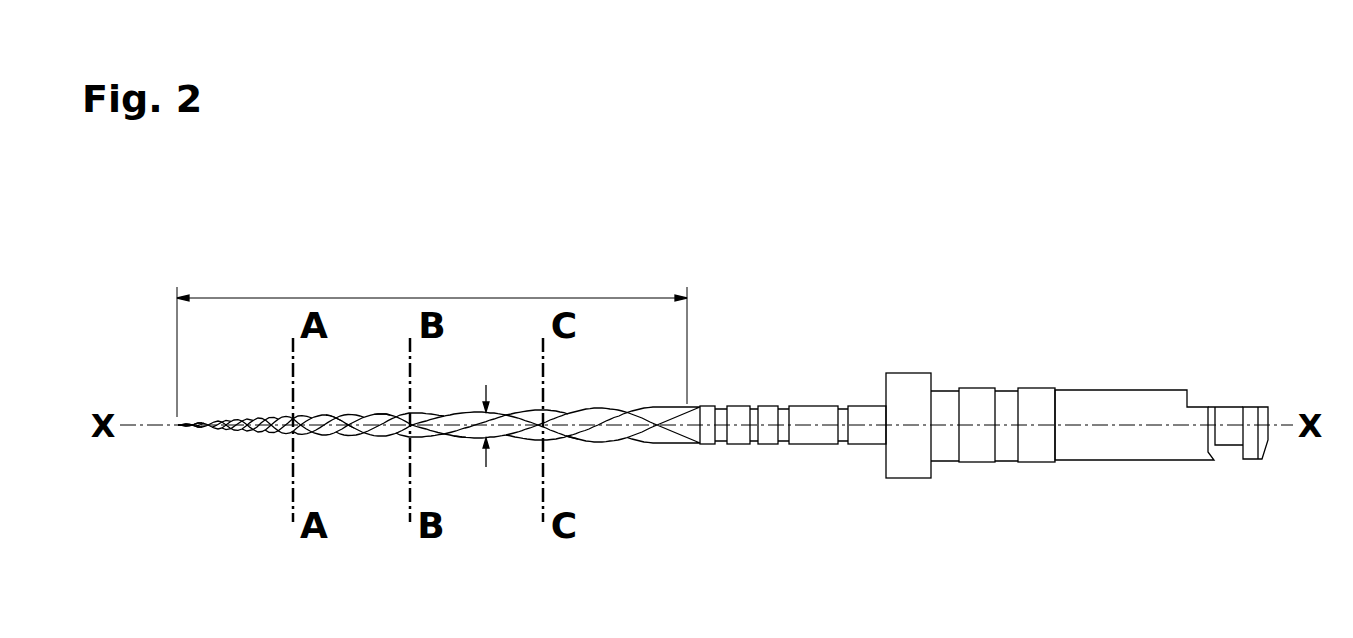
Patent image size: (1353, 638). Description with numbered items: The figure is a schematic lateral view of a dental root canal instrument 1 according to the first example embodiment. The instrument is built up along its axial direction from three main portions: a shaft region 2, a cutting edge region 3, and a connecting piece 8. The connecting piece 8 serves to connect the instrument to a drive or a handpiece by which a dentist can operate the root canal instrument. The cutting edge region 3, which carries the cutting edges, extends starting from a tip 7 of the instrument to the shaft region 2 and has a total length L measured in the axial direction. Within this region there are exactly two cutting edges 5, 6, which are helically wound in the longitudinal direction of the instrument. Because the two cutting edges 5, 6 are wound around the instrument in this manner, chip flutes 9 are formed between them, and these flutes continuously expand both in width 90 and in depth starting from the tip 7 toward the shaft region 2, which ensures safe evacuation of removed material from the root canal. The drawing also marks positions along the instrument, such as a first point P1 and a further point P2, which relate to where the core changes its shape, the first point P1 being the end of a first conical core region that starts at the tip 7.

The dental root canal instrument 1 is at (762, 306).
The shaft region 2 is at (810, 440).
The cutting edge region 3 is at (651, 467).
The cutting edge 5 is at (337, 420).
The cutting edge 6 is at (385, 414).
The tip 7 is at (177, 426).
The connecting piece 8 is at (1147, 403).
The chip flutes 9 is at (462, 432).
The width 90 is at (478, 418).
The first point P1 is at (357, 458).
The second pitch P2 is at (580, 460).
The total length L is at (432, 336).